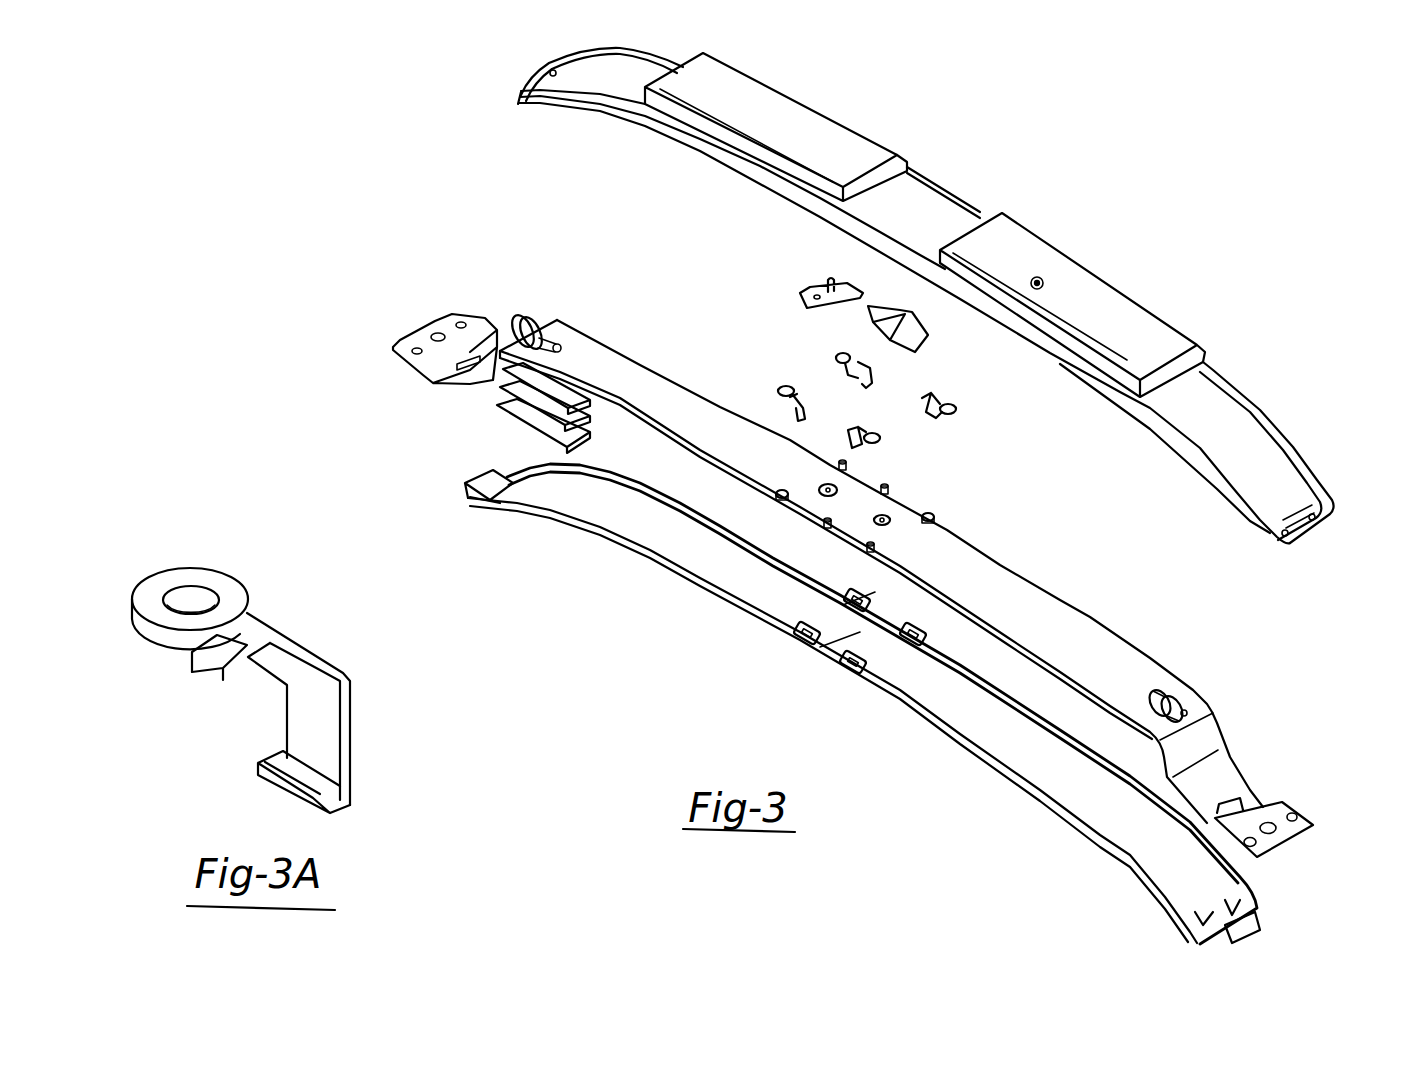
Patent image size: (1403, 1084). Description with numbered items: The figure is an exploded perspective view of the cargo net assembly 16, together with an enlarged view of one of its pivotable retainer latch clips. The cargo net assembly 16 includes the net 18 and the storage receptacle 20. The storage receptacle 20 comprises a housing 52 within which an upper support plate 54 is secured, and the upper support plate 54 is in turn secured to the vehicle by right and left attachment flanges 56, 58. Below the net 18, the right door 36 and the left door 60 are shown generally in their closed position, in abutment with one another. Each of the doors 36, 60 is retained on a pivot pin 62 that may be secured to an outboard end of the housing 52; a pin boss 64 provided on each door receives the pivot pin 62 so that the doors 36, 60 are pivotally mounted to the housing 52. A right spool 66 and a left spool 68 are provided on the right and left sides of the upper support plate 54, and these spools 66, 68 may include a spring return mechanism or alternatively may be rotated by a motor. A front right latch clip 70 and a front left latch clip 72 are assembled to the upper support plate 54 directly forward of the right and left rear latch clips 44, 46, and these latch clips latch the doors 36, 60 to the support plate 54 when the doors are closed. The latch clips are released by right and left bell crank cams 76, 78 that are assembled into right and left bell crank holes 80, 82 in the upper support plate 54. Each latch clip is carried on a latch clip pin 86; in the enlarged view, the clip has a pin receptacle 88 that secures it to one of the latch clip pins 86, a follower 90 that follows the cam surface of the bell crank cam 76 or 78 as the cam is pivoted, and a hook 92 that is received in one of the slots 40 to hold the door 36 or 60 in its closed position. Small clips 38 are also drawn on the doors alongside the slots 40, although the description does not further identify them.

In FIG. 3, the cargo net assembly 16 is at (1383, 411).
In FIG. 3, the net 18 is at (492, 402).
In FIG. 3, the storage receptacle 20 is at (1078, 258).
In FIG. 3, the right door 36 is at (1123, 843).
In FIG. 3, the clip 38 is at (843, 592).
In FIG. 3, the slot 40 is at (795, 634).
In FIG. 3, the right rear latch clip 44 is at (880, 441).
In FIG. 3, the left rear latch clip 46 is at (782, 387).
In FIG. 3, the housing 52 is at (812, 118).
In FIG. 3, the upper support plate 54 is at (1097, 633).
In FIG. 3, the right attachment flange 56 is at (1292, 825).
In FIG. 3, the left attachment flange 58 is at (436, 330).
In FIG. 3, the left door 60 is at (762, 593).
In FIG. 3, the pivot pin 62 is at (545, 75).
In FIG. 3, the pin boss 64 is at (470, 500).
In FIG. 3, the right spool 66 is at (1193, 705).
In FIG. 3, the left spool 68 is at (528, 316).
In FIG. 3, the front right latch clip 70 is at (952, 408).
In FIG. 3, the front left latch clip 72 is at (835, 360).
In FIG. 3, the right bell crank cam 76 is at (886, 312).
In FIG. 3, the left bell crank cam 78 is at (822, 287).
In FIG. 3, the right bell crank hole 80 is at (891, 526).
In FIG. 3, the left bell crank hole 82 is at (818, 485).
In FIG. 3, the latch clip pin 86 is at (773, 490).
In FIG. 3A, the pin receptacle 88 is at (182, 596).
In FIG. 3A, the follower 90 is at (184, 657).
In FIG. 3A, the hook 92 is at (283, 765).